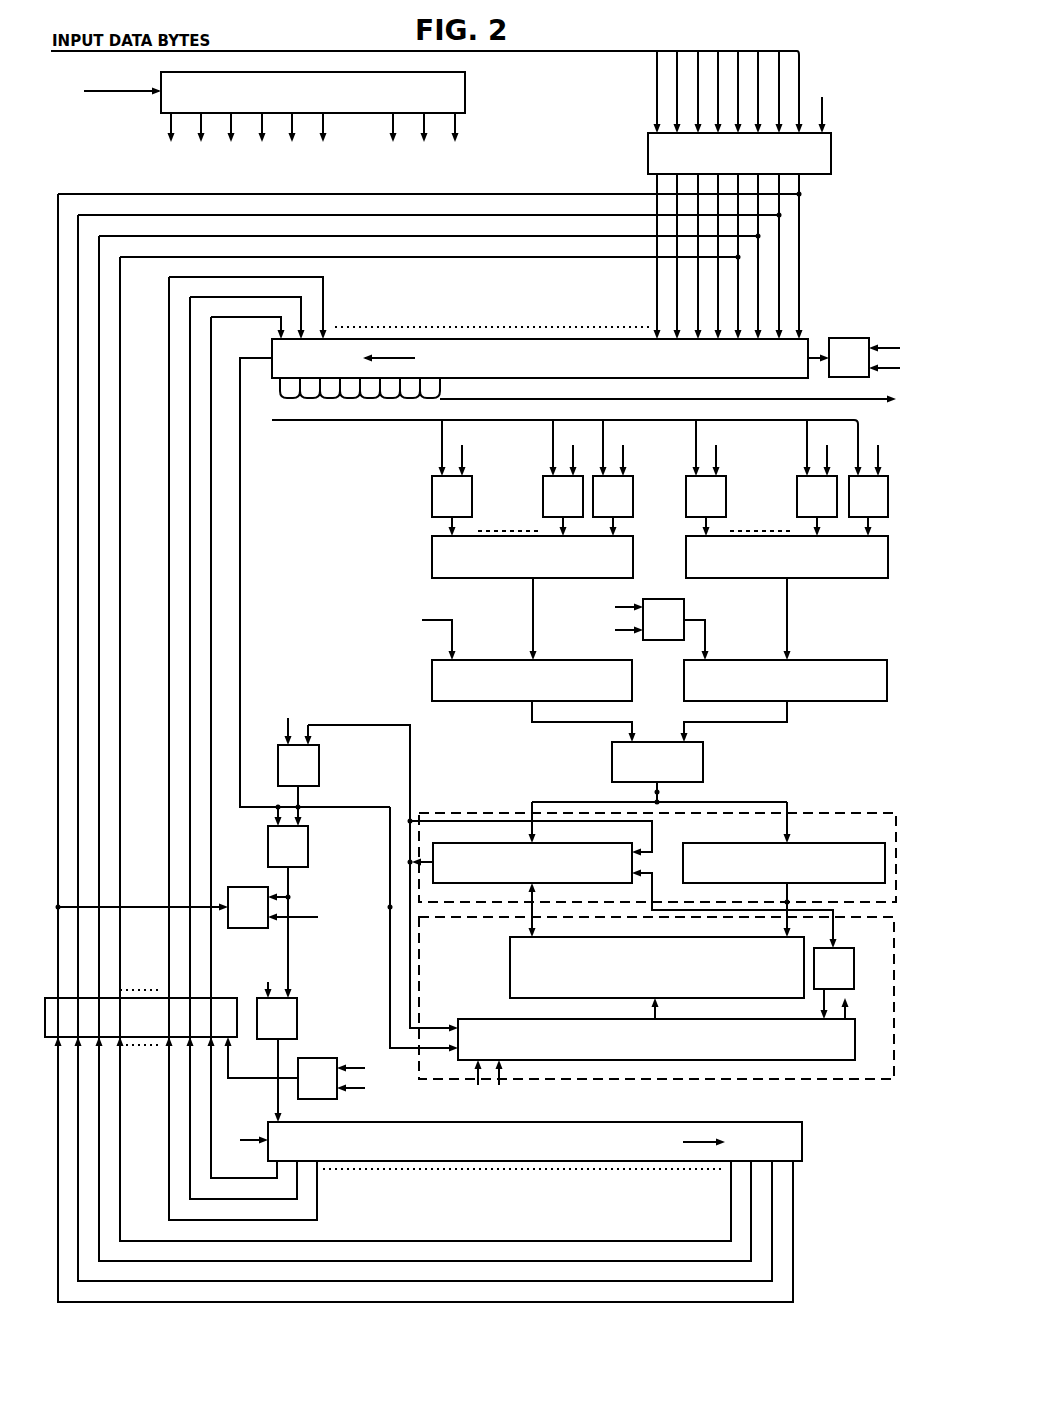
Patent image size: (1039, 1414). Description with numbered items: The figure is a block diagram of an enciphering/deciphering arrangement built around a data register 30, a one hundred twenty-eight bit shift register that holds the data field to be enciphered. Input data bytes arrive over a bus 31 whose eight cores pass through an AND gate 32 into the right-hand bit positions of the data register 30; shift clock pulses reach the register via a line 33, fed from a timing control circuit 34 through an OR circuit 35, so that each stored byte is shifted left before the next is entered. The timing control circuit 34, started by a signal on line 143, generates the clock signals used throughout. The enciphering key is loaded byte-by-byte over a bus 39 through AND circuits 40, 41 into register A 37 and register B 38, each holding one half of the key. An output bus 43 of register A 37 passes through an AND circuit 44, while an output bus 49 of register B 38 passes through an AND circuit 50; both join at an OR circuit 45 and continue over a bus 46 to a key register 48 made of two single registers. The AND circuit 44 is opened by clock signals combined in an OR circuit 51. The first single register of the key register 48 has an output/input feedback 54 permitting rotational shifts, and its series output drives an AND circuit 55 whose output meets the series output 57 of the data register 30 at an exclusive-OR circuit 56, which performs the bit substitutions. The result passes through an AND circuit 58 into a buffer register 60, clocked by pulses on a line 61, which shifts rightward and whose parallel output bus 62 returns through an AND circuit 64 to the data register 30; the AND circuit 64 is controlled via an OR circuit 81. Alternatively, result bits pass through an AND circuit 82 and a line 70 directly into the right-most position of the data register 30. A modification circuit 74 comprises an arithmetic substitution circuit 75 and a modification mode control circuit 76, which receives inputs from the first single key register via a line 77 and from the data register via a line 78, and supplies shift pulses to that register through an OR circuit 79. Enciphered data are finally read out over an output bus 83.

The start signal line 143 is at (118, 93).
The timing control circuit 34 is at (466, 95).
The bus 31 is at (543, 52).
The AND gate 32 is at (648, 160).
The line 70 is at (802, 247).
The data register 30 is at (272, 350).
The line 33 is at (818, 352).
The OR circuit 35 is at (862, 338).
The output bus 83 is at (506, 399).
The bus 39 is at (502, 420).
The AND circuit 41 is at (428, 497).
The AND circuit 40 is at (682, 497).
The register B 38 is at (432, 558).
The register A 37 is at (686, 558).
The series output 57 is at (244, 533).
The output bus 49 is at (537, 615).
The OR circuit 51 is at (686, 606).
The output bus 43 is at (791, 615).
The AND circuit 50 is at (432, 681).
The AND circuit 44 is at (684, 681).
The OR circuit 45 is at (705, 760).
The bus 46 is at (662, 796).
The output/input feedback 54 is at (480, 815).
The key register 48 is at (851, 810).
The line 77 is at (412, 772).
The AND circuit 55 is at (320, 762).
The exclusive-OR circuit 56 is at (310, 838).
The AND circuit 82 is at (241, 887).
The line 78 is at (388, 907).
The AND circuit 64 is at (213, 998).
The bus 62 is at (131, 1114).
The AND circuit 58 is at (300, 1002).
The OR circuit 81 is at (325, 1058).
The buffer register 60 is at (805, 1140).
The line 61 is at (244, 1146).
The modification circuit 74 is at (862, 1082).
The arithmetic substitution circuit 75 is at (510, 966).
The OR circuit 79 is at (854, 950).
The modification mode control circuit 76 is at (858, 1052).